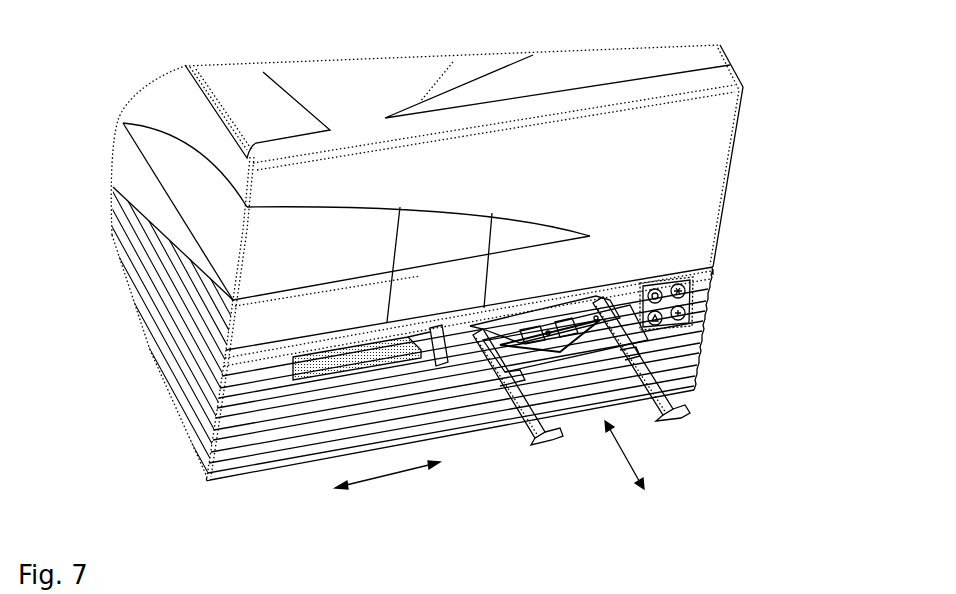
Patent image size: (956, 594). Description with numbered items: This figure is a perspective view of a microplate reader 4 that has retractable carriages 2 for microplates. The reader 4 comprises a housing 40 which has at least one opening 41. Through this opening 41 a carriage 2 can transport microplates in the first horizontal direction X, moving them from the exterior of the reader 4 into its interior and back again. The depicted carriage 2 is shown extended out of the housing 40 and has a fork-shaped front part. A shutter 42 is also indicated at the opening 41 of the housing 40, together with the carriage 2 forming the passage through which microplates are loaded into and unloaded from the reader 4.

The carriage 2 is at (695, 372).
The reader 4 is at (776, 70).
The housing 40 is at (693, 219).
The opening 41 is at (307, 366).
The shutter 42 is at (340, 360).